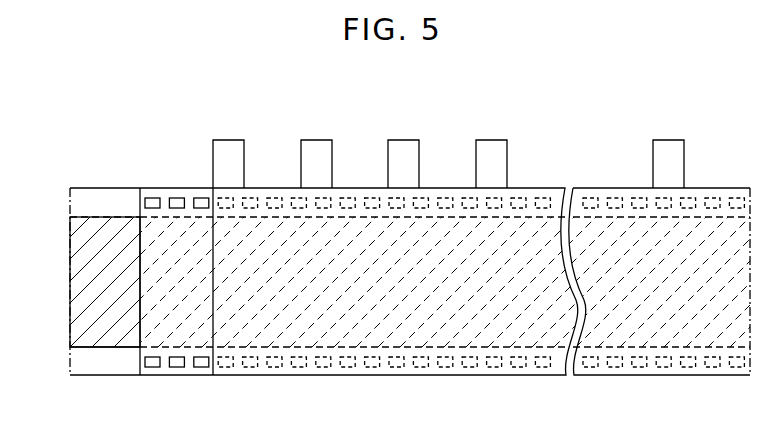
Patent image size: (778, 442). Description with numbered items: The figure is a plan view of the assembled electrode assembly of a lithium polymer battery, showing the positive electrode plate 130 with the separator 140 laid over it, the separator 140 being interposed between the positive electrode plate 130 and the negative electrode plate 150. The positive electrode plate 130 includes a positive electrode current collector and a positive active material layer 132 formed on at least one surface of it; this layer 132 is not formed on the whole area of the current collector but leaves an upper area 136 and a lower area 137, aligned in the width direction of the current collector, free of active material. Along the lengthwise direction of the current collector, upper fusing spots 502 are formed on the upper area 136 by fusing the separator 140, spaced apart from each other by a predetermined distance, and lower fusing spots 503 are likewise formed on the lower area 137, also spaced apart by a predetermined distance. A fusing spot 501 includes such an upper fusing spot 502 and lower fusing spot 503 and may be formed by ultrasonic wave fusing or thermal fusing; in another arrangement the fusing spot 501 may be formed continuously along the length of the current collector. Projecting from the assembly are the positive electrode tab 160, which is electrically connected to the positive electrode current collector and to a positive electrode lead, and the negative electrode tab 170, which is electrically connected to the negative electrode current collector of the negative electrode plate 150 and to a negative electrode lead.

The positive electrode plate 130 is at (68, 320).
The positive active material layer 132 is at (93, 233).
The upper area 136 is at (112, 197).
The lower area 137 is at (100, 372).
The separator 140 is at (140, 306).
The negative electrode plate 150 is at (213, 302).
The positive electrode tab 160 is at (315, 150).
The negative electrode tab 170 is at (665, 150).
The fusing spot 501 is at (191, 217).
The upper fusing spot 502 is at (175, 197).
The lower fusing spot 503 is at (178, 355).